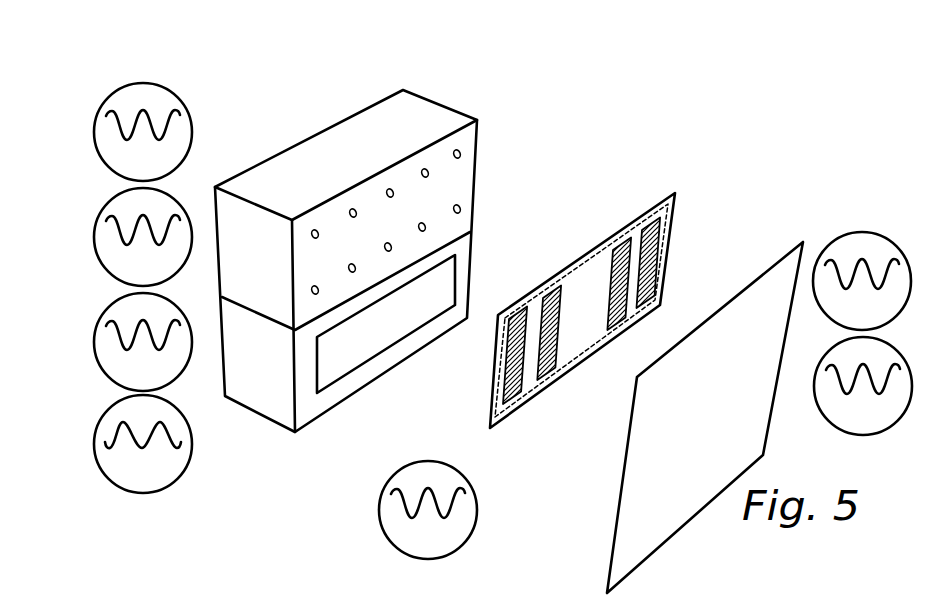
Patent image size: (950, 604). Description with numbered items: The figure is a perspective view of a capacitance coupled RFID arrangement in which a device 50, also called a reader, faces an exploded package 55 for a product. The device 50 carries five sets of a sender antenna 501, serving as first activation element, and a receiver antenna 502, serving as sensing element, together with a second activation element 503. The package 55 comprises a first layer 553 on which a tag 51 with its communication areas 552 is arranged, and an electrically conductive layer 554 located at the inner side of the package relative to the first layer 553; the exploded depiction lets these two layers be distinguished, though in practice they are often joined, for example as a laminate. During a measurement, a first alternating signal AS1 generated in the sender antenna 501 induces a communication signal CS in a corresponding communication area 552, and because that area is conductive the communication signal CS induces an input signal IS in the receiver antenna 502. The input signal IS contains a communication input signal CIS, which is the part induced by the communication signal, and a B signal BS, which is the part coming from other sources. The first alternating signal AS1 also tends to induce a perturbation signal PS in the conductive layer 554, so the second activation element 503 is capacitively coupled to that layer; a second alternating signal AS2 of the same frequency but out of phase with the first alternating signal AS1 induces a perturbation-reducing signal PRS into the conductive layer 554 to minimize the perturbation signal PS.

The device 50 is at (295, 118).
The sender antenna 501 is at (461, 154).
The receiver antenna 502 is at (461, 209).
The second activation element 503 is at (345, 375).
The package 55 is at (812, 233).
The tag 51 is at (622, 313).
The communication area 552 is at (554, 366).
The first layer 553 is at (668, 268).
The electrically conductive layer 554 is at (763, 430).
The first alternating signal AS1 is at (310, 234).
The second alternating signal AS2 is at (316, 367).
The B signal BS is at (310, 290).
The communication input signal CIS is at (310, 290).
The input signal IS is at (83, 184).
The communication signal CS is at (513, 377).
The perturbation signal PS is at (777, 308).
The perturbation-reducing signal PRS is at (775, 370).